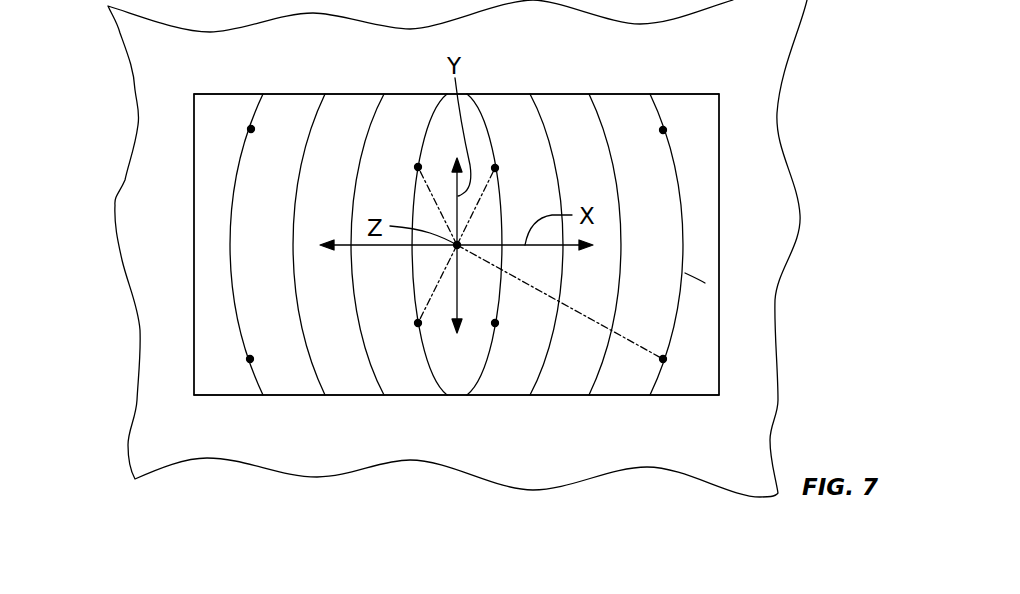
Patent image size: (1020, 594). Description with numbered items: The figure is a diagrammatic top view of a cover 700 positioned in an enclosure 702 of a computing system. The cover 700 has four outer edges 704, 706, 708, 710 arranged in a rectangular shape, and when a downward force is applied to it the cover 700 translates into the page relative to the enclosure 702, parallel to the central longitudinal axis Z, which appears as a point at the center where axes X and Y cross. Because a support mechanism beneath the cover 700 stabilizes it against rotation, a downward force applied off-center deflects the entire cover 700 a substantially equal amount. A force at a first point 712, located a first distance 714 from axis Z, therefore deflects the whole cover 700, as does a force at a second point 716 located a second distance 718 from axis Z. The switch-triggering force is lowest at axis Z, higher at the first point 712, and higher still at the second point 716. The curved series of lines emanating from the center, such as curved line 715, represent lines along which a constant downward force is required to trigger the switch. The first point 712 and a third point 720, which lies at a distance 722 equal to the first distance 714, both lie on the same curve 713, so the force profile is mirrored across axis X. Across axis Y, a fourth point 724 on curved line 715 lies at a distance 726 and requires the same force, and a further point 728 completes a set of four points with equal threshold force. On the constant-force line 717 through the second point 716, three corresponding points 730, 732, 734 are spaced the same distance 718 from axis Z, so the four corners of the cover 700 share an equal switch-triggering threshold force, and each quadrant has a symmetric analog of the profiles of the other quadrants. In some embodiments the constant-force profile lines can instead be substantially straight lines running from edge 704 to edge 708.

The cover 700 is at (692, 104).
The enclosure 702 is at (767, 39).
The outer edge 704 is at (408, 94).
The outer edge 706 is at (720, 245).
The outer edge 708 is at (616, 394).
The outer edge 710 is at (194, 245).
The first point 712 is at (418, 167).
The curve 713 is at (430, 283).
The first distance 714 is at (437, 200).
The curved line 715 is at (491, 151).
The second point 716 is at (663, 359).
The constant-force line 717 is at (685, 273).
The second distance 718 is at (630, 338).
The third point 720 is at (418, 323).
The distance 722 is at (437, 290).
The fourth point 724 is at (495, 168).
The distance 726 is at (474, 203).
The point 728 is at (495, 323).
The corresponding point 730 is at (663, 130).
The corresponding point 732 is at (250, 129).
The corresponding point 734 is at (250, 359).